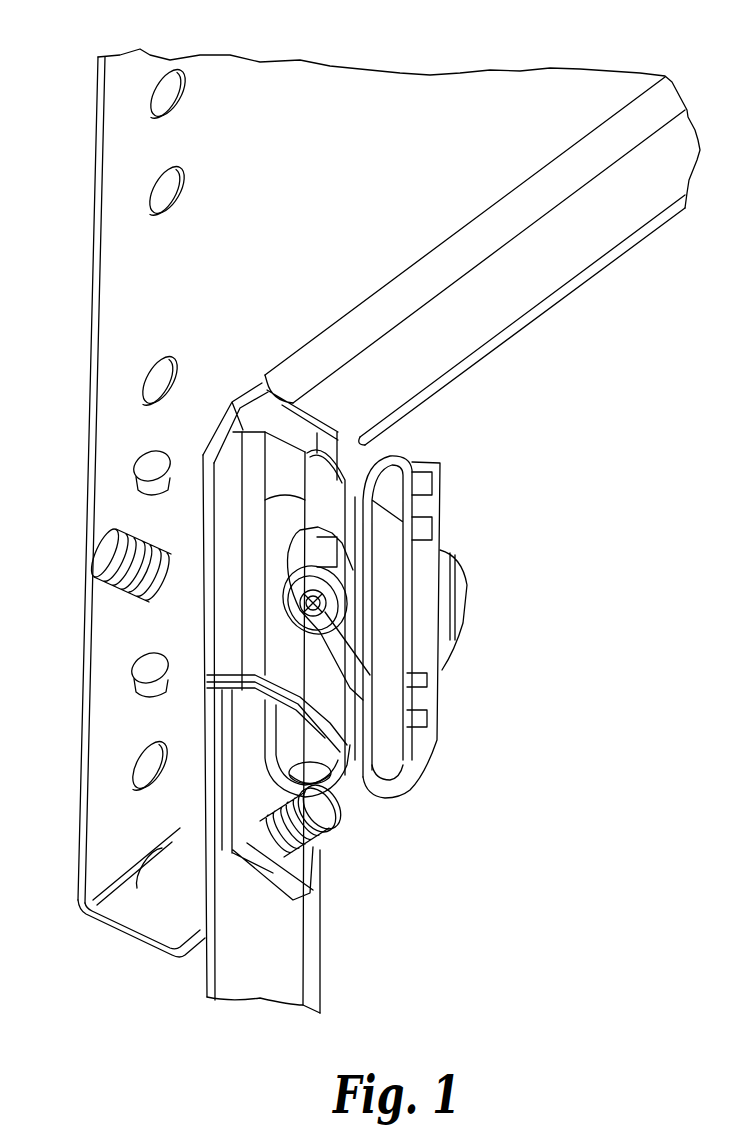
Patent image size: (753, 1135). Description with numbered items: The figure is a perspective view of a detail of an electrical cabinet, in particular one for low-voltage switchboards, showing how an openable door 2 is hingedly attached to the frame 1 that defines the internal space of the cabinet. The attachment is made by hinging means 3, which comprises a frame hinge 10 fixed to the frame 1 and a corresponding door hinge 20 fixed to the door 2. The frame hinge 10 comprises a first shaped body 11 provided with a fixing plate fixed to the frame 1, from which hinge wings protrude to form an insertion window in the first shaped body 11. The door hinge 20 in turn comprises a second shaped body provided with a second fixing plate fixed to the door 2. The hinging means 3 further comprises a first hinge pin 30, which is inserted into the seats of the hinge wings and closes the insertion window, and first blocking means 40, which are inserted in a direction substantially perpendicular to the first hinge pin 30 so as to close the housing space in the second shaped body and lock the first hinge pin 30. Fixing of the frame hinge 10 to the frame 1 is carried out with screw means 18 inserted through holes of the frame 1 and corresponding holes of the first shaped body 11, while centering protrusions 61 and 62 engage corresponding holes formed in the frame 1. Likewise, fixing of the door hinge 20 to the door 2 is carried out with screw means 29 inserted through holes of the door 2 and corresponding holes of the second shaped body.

The frame 1 is at (350, 147).
The door 2 is at (260, 698).
The hinging means 3 is at (390, 677).
The frame hinge 10 is at (212, 542).
The first shaped body 11 is at (288, 498).
The screw means 18 is at (92, 595).
The door hinge 20 is at (242, 868).
The screw means 29 is at (336, 830).
The first hinge pin 30 is at (340, 756).
The first blocking means 40 is at (335, 589).
The centering protrusion 61 is at (130, 682).
The centering protrusion 62 is at (132, 465).